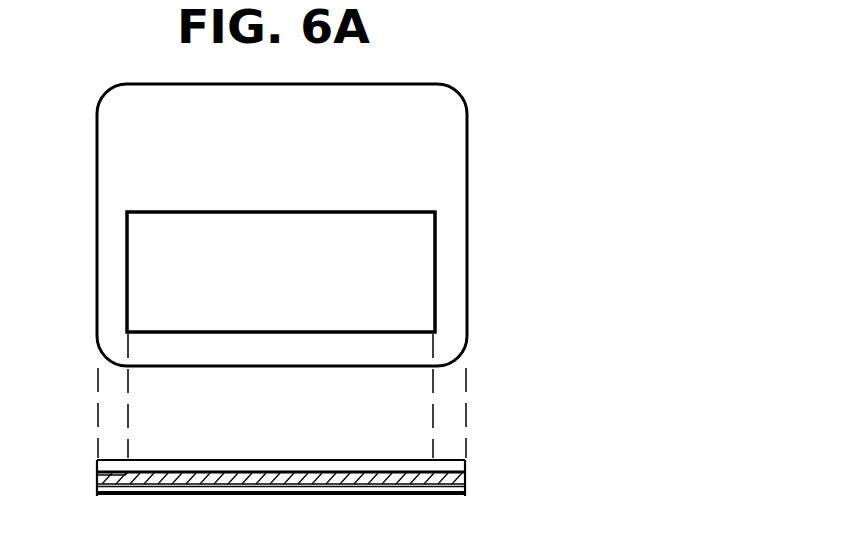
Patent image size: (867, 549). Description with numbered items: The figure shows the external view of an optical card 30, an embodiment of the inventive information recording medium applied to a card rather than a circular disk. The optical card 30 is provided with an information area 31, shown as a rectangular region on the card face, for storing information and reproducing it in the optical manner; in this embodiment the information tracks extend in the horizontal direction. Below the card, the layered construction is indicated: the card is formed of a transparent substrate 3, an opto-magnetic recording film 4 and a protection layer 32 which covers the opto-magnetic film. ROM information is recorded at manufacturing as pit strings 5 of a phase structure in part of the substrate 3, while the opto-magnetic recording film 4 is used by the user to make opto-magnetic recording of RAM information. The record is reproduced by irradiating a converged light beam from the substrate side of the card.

The optical card 30 is at (467, 121).
The information area 31 is at (415, 211).
The transparent substrate 3 is at (466, 468).
The opto-magnetic recording film 4 is at (468, 480).
The pit strings 5 is at (204, 473).
The protection layer 32 is at (98, 486).